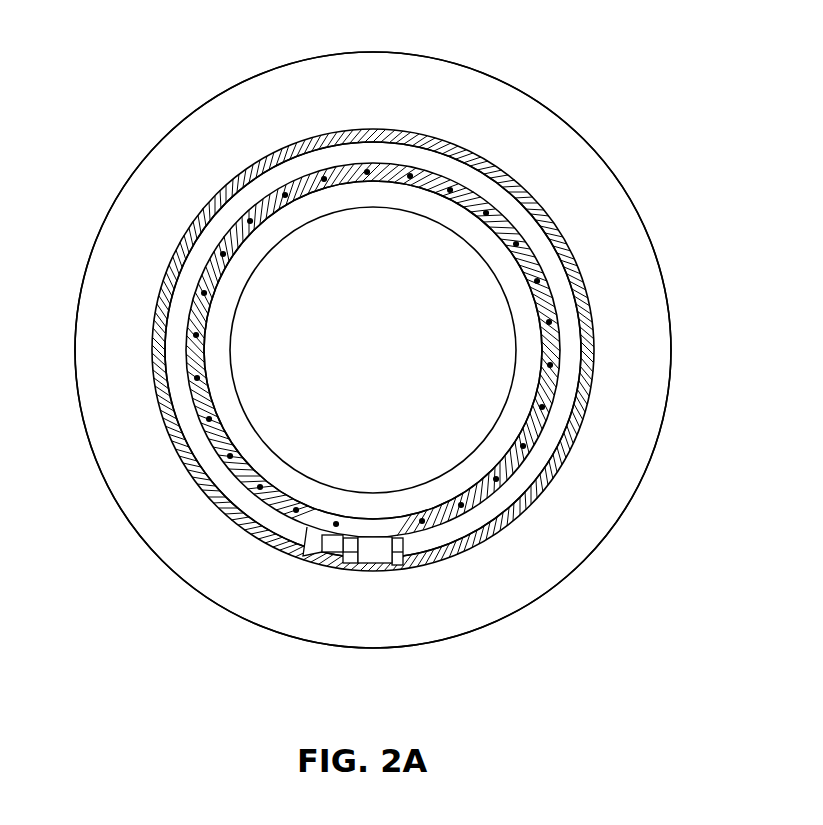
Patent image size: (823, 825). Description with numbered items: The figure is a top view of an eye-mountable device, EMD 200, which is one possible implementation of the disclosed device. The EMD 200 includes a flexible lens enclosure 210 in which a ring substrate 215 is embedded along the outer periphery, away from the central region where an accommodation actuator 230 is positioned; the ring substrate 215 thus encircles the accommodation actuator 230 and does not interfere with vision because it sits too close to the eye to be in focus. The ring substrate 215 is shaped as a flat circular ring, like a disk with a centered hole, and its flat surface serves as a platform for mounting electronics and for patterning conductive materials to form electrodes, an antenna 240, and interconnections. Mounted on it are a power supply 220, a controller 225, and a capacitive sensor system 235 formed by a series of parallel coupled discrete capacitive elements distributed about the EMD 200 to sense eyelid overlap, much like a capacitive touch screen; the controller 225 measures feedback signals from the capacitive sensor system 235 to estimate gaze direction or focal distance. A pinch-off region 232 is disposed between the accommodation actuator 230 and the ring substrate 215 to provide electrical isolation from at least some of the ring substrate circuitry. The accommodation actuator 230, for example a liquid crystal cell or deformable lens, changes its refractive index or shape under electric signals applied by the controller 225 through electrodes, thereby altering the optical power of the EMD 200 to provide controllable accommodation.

The EMD 200 is at (149, 71).
The flexible lens enclosure 210 is at (116, 512).
The ring substrate 215 is at (548, 490).
The power supply 220 is at (325, 545).
The controller 225 is at (373, 557).
The accommodation actuator 230 is at (334, 313).
The pinch-off region 232 is at (528, 355).
The capacitive sensor system 235 is at (188, 325).
The antenna 240 is at (488, 522).